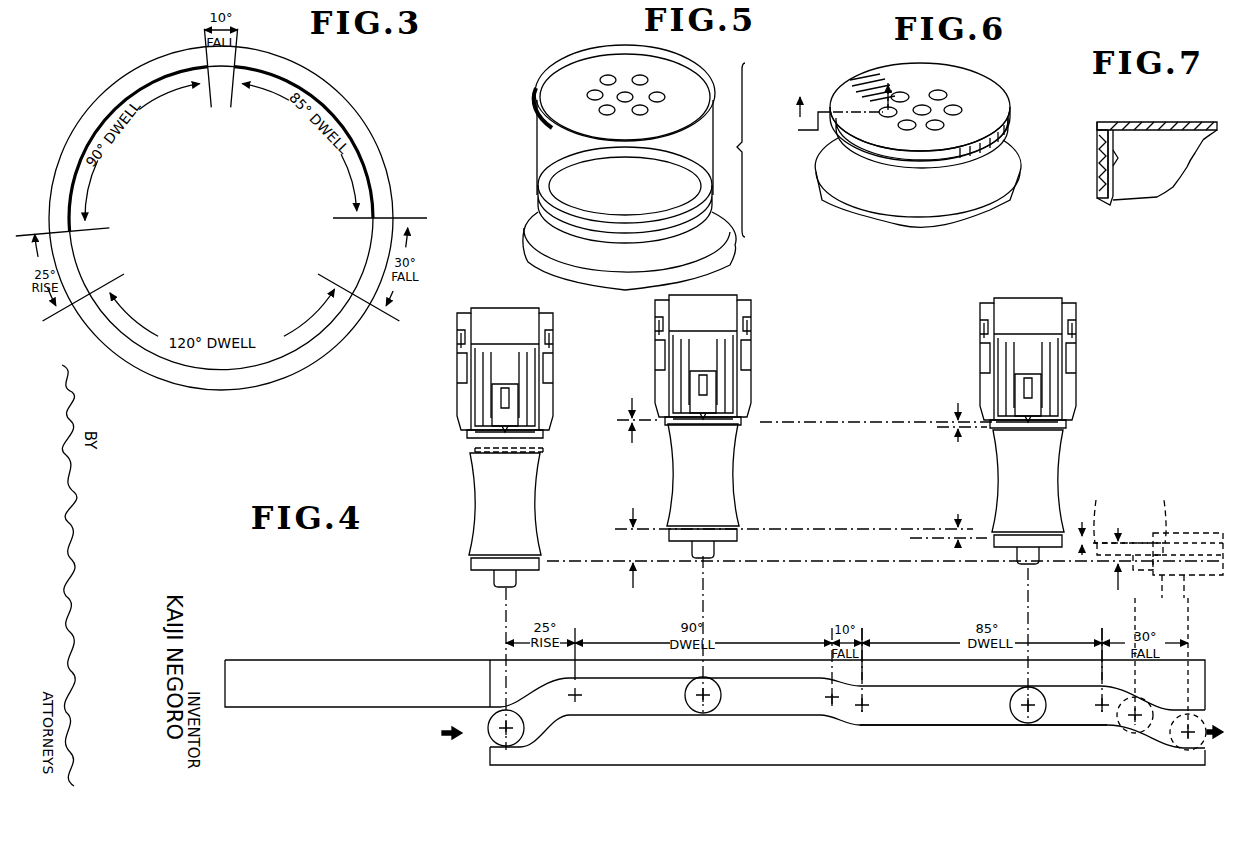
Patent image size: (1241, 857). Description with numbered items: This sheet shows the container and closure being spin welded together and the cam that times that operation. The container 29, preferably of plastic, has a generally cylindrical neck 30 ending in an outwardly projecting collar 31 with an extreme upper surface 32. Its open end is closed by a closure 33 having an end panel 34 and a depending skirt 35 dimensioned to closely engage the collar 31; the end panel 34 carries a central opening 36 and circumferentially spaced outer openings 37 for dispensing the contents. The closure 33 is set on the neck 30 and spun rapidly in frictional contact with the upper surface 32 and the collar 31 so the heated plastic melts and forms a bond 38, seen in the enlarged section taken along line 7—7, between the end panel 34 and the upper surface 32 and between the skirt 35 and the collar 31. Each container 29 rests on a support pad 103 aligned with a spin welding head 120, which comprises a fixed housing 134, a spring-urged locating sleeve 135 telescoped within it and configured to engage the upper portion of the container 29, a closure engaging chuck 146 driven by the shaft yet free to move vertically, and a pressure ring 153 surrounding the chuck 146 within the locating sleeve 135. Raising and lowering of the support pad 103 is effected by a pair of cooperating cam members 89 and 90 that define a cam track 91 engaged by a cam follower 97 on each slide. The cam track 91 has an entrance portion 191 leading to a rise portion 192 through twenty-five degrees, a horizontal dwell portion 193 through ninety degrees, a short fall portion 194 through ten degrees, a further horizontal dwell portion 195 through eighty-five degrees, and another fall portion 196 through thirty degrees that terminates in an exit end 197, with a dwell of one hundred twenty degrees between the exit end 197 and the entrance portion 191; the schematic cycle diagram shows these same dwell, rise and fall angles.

In FIG. 6, the section line 7— 7 is at (850, 99).
In FIG. 5, the container 29 is at (736, 240).
In FIG. 6, the container 29 is at (928, 218).
In FIG. 7, the container 29 is at (1100, 201).
In FIG. 4, the container 29 is at (538, 503).
In FIG. 5, the neck 30 is at (538, 210).
In FIG. 6, the neck 30 is at (1003, 140).
In FIG. 5, the collar 31 is at (540, 192).
In FIG. 7, the collar 31 is at (1120, 160).
In FIG. 5, the upper surface 32 is at (712, 180).
In FIG. 7, the upper surface 32 is at (1122, 135).
In FIG. 5, the closure 33 is at (568, 55).
In FIG. 6, the closure 33 is at (999, 88).
In FIG. 7, the closure 33 is at (1114, 120).
In FIG. 4, the closure 33 is at (538, 450).
In FIG. 5, the end panel 34 is at (545, 110).
In FIG. 7, the end panel 34 is at (1160, 121).
In FIG. 5, the skirt 35 is at (540, 72).
In FIG. 7, the skirt 35 is at (1102, 190).
In FIG. 5, the central opening 36 is at (637, 79).
In FIG. 6, the central opening 36 is at (925, 103).
In FIG. 5, the outer openings 37 is at (660, 95).
In FIG. 6, the outer openings 37 is at (948, 97).
In FIG. 7, the outer openings 37 is at (1200, 140).
In FIG. 7, the bond 38 is at (1100, 140).
In FIG. 4, the cam member 89 is at (508, 768).
In FIG. 4, the cam member 90 is at (825, 694).
In FIG. 4, the cam track 91 is at (957, 714).
In FIG. 4, the cam follower 97 is at (488, 719).
In FIG. 4, the support pad 103 is at (530, 580).
In FIG. 4, the spin welding head 120 is at (767, 361).
In FIG. 4, the fixed housing 134 is at (547, 343).
In FIG. 4, the locating sleeve 135 is at (543, 427).
In FIG. 4, the closure engaging chuck 146 is at (518, 390).
In FIG. 4, the pressure ring 153 is at (478, 415).
In FIG. 4, the entrance portion 191 is at (485, 745).
In FIG. 4, the rise portion 192 is at (550, 718).
In FIG. 4, the dwell portion 193 is at (642, 708).
In FIG. 4, the short fall portion 194 is at (845, 712).
In FIG. 4, the dwell portion 195 is at (903, 725).
In FIG. 4, the fall portion 196 is at (1140, 738).
In FIG. 4, the exit end 197 is at (1190, 708).